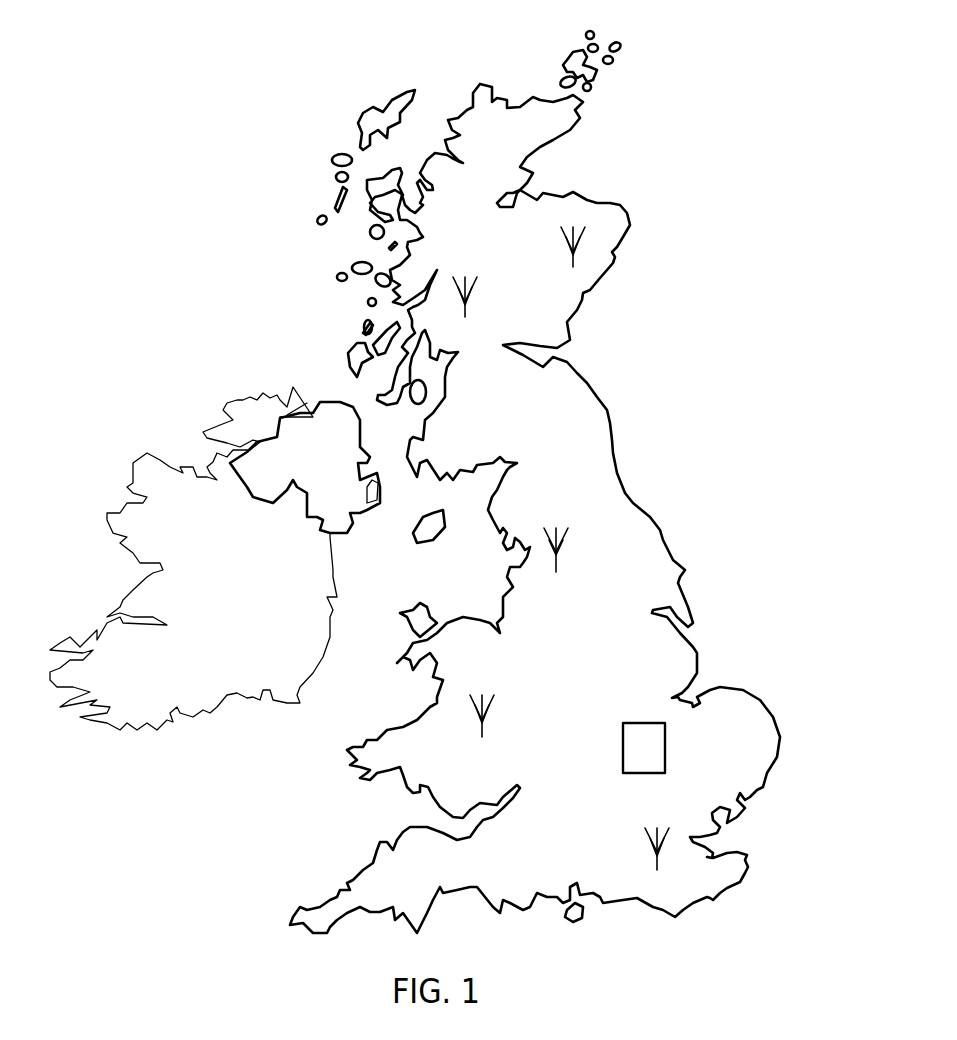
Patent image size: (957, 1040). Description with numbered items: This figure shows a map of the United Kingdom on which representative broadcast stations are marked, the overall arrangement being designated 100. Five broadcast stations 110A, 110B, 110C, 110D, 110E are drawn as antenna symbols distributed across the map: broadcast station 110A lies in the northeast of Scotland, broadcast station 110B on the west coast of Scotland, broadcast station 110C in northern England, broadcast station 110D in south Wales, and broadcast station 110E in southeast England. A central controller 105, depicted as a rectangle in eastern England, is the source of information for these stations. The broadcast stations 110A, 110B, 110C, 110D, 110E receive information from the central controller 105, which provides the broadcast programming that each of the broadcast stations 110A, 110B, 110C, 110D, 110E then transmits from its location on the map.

The communication system / geographical coverage map 100 is at (728, 92).
The central controller 105 is at (667, 747).
The broadcast station 110A is at (573, 262).
The broadcast station 110B is at (463, 315).
The broadcast station 110C is at (560, 560).
The broadcast station 110D is at (482, 735).
The broadcast station 110E is at (657, 867).